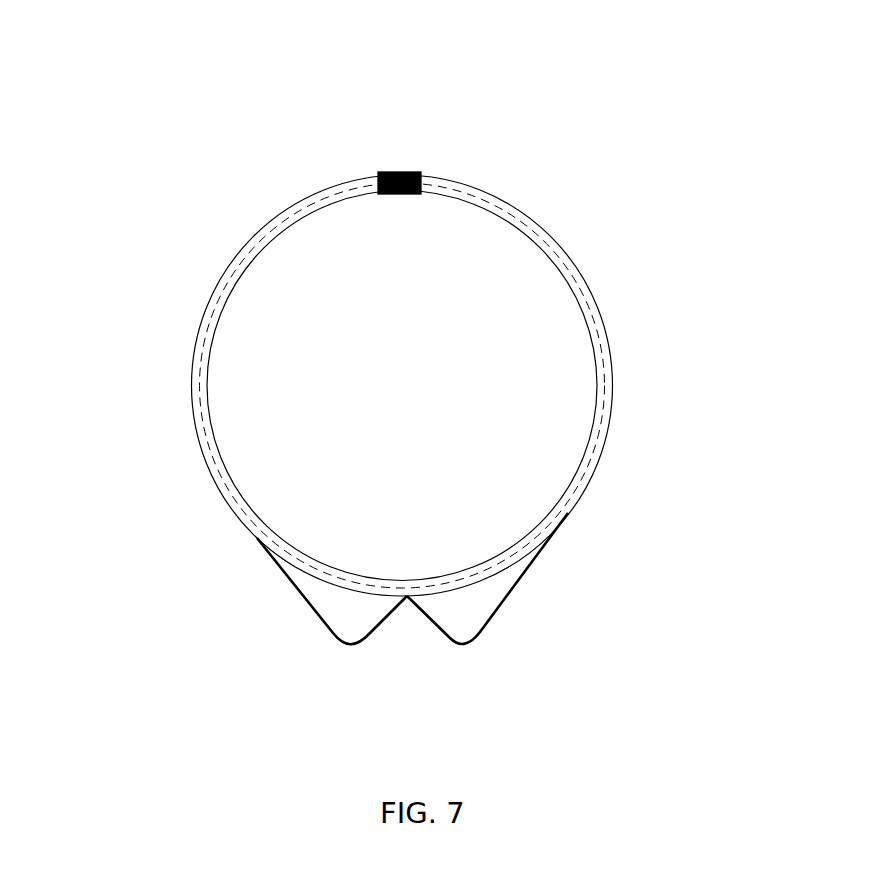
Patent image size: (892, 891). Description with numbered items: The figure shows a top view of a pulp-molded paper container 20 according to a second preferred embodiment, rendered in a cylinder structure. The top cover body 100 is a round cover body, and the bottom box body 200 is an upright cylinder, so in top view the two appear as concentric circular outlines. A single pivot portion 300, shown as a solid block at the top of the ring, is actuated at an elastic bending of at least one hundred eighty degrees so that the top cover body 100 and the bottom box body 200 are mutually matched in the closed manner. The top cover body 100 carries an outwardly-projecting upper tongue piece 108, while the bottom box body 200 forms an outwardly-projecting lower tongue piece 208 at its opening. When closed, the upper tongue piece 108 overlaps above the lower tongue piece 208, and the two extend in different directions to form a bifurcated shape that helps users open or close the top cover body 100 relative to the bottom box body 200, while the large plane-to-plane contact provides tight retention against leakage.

The pulp-molded paper container 20 is at (193, 106).
The top cover body 100 is at (608, 355).
The bottom box body 200 is at (547, 245).
The pivot portion 300 is at (403, 171).
The lower tongue piece 208 is at (357, 614).
The upper tongue piece 108 is at (463, 608).